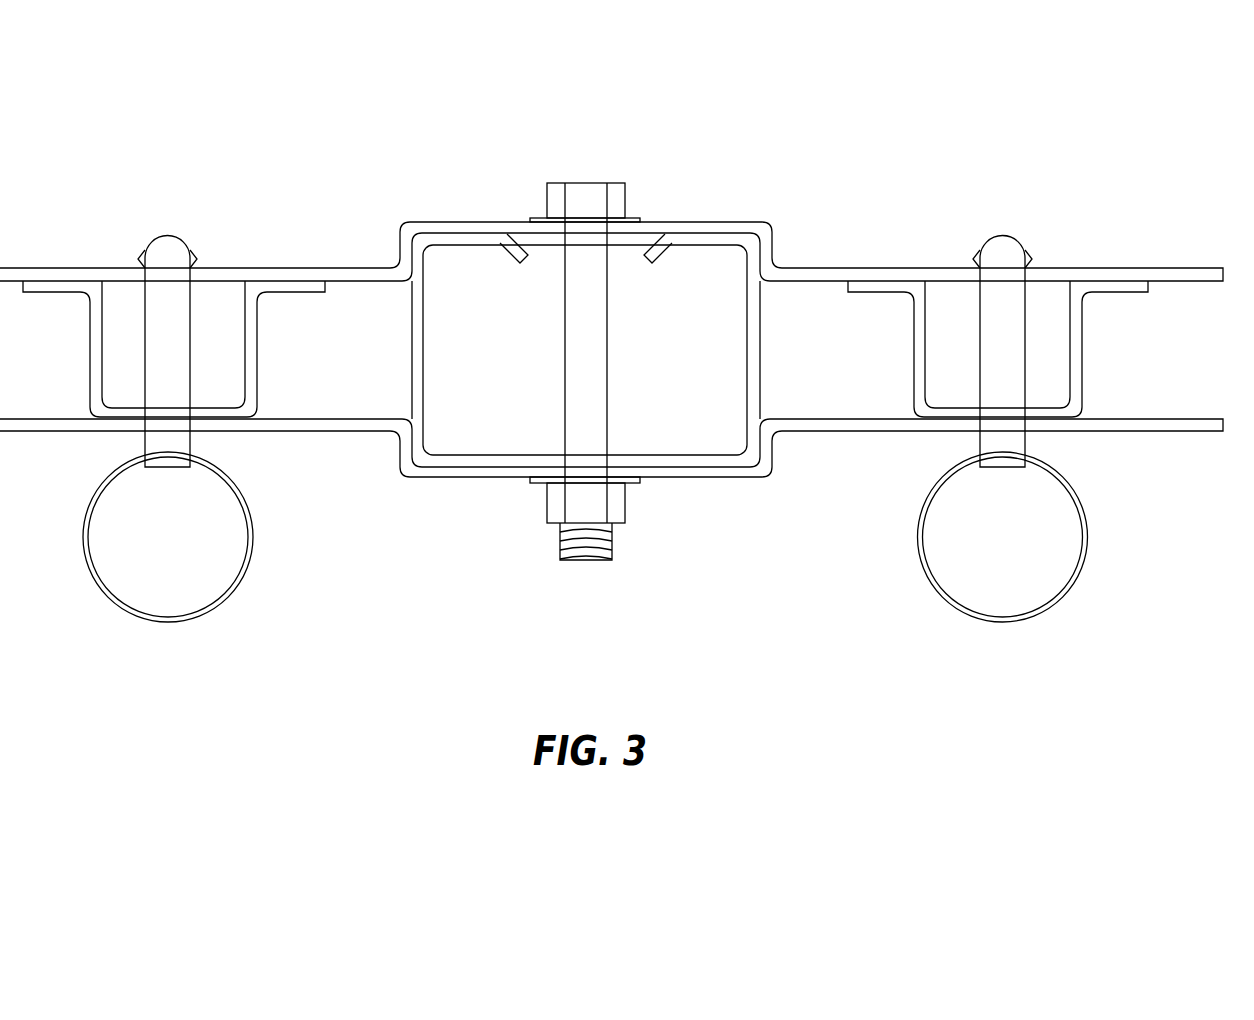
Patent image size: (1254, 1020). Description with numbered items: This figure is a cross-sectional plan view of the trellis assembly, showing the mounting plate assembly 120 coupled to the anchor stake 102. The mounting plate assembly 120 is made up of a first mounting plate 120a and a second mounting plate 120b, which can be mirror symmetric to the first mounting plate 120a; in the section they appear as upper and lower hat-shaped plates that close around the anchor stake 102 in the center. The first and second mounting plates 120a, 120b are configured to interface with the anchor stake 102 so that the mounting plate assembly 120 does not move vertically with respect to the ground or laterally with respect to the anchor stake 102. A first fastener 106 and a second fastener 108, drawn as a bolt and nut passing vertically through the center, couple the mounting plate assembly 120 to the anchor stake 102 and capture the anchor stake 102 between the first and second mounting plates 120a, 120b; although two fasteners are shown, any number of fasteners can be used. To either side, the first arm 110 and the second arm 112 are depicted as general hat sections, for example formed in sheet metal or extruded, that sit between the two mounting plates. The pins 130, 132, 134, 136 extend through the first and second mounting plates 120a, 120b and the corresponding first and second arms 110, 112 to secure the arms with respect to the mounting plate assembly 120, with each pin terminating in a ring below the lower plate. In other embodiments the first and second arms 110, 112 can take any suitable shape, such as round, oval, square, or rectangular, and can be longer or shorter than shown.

The anchor stake 102 is at (718, 460).
The first fastener 106 is at (580, 332).
The second fastener 108 is at (586, 183).
The first arm 110 is at (247, 410).
The second arm 112 is at (1068, 410).
The mounting plate assembly 120 is at (611, 350).
The first mounting plate 120a is at (454, 222).
The second mounting plate 120b is at (430, 480).
The pin 130 is at (168, 390).
The pin 132 is at (168, 237).
The pin 134 is at (1003, 391).
The pin 136 is at (1003, 237).